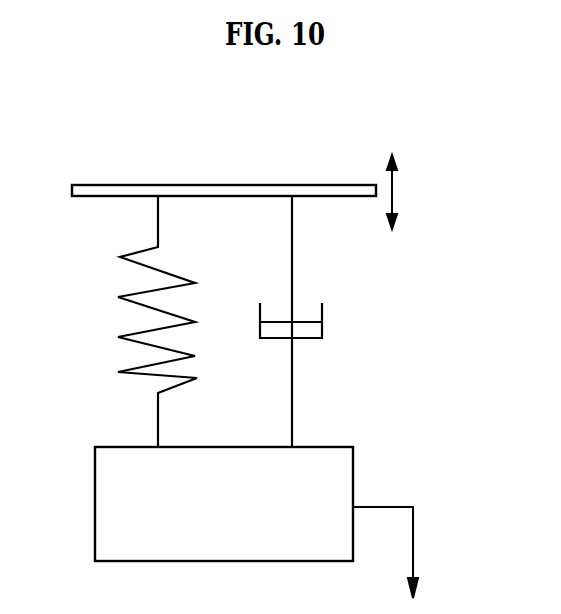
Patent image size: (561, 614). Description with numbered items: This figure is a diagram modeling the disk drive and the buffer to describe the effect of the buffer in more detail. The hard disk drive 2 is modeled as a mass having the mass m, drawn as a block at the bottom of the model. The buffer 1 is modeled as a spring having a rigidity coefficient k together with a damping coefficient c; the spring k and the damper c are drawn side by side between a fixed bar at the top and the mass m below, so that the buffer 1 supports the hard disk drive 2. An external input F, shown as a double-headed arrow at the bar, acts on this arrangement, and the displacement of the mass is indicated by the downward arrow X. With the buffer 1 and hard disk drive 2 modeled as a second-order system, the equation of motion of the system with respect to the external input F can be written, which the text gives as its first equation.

The buffer 1 is at (189, 321).
The hard disk drive (HDD) 2 is at (299, 504).
The rigidity coefficient k is at (169, 321).
The damping coefficient c is at (302, 321).
The mass m is at (224, 504).
The external input F is at (400, 192).
The displacement direction X is at (396, 552).